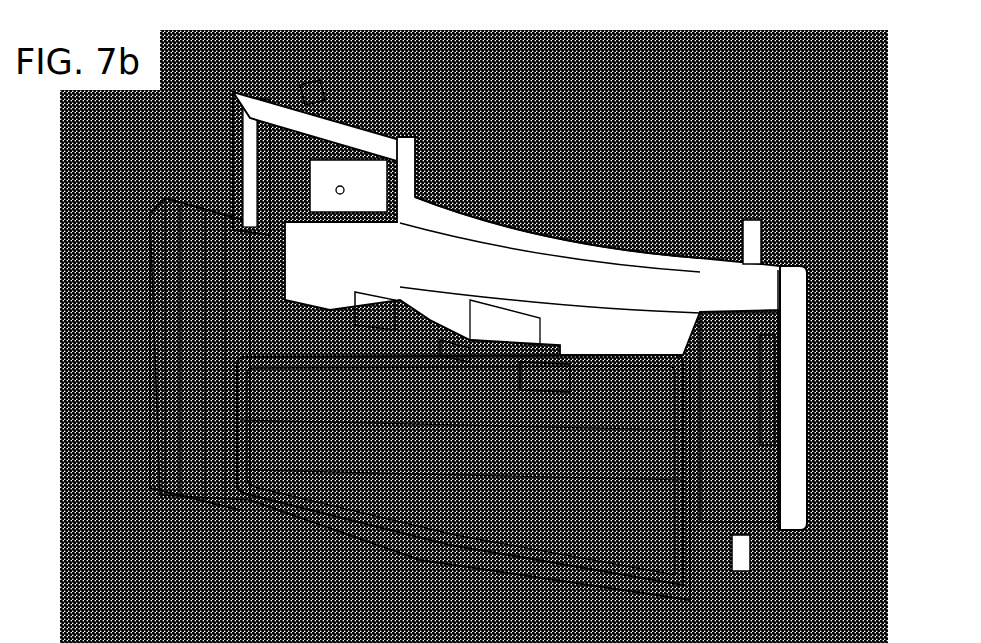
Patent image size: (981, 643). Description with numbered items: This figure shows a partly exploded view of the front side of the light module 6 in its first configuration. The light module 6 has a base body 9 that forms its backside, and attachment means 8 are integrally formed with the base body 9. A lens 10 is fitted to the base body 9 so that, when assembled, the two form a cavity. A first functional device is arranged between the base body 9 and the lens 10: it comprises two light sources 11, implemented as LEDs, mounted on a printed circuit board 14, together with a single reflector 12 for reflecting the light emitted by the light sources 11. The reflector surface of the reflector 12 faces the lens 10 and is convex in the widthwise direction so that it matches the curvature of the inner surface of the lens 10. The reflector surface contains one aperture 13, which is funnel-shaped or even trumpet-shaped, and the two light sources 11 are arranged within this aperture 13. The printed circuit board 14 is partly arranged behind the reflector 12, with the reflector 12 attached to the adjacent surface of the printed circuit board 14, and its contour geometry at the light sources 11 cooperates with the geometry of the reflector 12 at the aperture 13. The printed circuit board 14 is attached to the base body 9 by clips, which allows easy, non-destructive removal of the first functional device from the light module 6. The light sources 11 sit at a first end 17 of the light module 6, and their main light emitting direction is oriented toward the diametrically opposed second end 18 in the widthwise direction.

The light module 6 is at (854, 96).
The attachment means 8 is at (318, 98).
The base body 9 is at (792, 290).
The lens 10 is at (227, 518).
The light sources 11 is at (463, 345).
The reflector 12 is at (623, 333).
The aperture 13 is at (503, 340).
The printed circuit board 14 is at (318, 190).
The first end 17 is at (231, 187).
The second end 18 is at (834, 401).